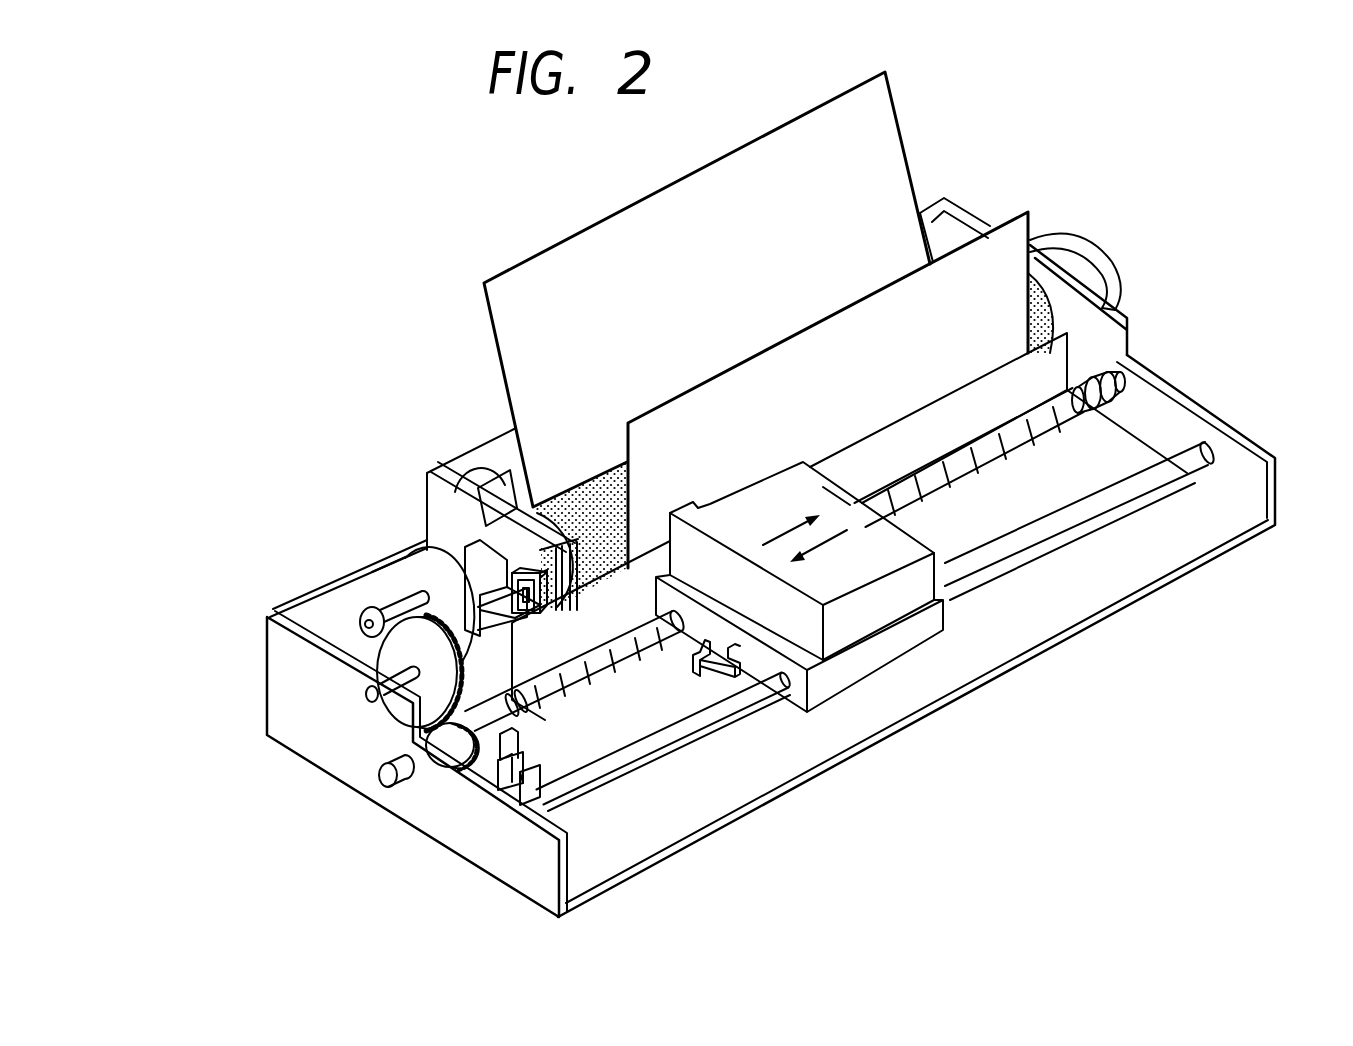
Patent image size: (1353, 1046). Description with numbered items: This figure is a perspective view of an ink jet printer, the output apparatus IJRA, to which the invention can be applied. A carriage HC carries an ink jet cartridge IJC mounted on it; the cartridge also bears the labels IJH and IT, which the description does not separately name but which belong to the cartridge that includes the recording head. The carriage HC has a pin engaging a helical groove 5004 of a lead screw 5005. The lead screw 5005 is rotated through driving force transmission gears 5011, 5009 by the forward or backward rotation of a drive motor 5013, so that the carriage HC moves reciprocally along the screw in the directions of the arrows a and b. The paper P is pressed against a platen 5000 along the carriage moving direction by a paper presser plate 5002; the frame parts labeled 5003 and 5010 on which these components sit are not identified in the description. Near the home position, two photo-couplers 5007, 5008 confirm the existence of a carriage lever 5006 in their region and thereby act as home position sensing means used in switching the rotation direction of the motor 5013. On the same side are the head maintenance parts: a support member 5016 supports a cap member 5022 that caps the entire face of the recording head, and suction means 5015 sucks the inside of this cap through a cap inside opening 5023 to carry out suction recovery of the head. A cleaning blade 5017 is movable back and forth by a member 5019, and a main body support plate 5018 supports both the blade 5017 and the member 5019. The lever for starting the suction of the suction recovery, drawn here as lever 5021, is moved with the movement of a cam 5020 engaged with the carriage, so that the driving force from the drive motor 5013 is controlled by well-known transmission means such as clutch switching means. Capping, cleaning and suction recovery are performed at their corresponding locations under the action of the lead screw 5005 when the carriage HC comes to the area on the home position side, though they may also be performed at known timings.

The recording sheet P is at (893, 118).
The ink jet recording apparatus IJRA is at (727, 520).
The ink jet cartridge IJC is at (831, 544).
The ink jet head IJH is at (708, 508).
The ink tank IT is at (823, 487).
The carriage HC is at (943, 628).
The platen 5000 is at (1033, 307).
The paper presser plate 5002 is at (995, 378).
The apparatus frame base 5003 is at (583, 790).
The helical groove 5004 is at (707, 665).
The lead screw 5005 is at (606, 635).
The carriage lever 5006 is at (740, 703).
The photo-coupler 5007 is at (503, 780).
The photo-coupler 5008 is at (508, 780).
The driving force transmission gear 5009 is at (405, 745).
The frame side plate 5010 is at (270, 735).
The driving force transmission gear 5011 is at (387, 652).
The drive motor 5013 is at (423, 545).
The suction means 5015 is at (450, 467).
The cap support member 5016 is at (500, 470).
The cleaning blade 5017 is at (543, 547).
The main body support plate 5018 is at (427, 482).
The blade moving member 5019 is at (427, 512).
The cam 5020 is at (423, 735).
The suction start lever 5021 is at (413, 600).
The cap member 5022 is at (565, 598).
The cap inside opening 5023 is at (550, 600).